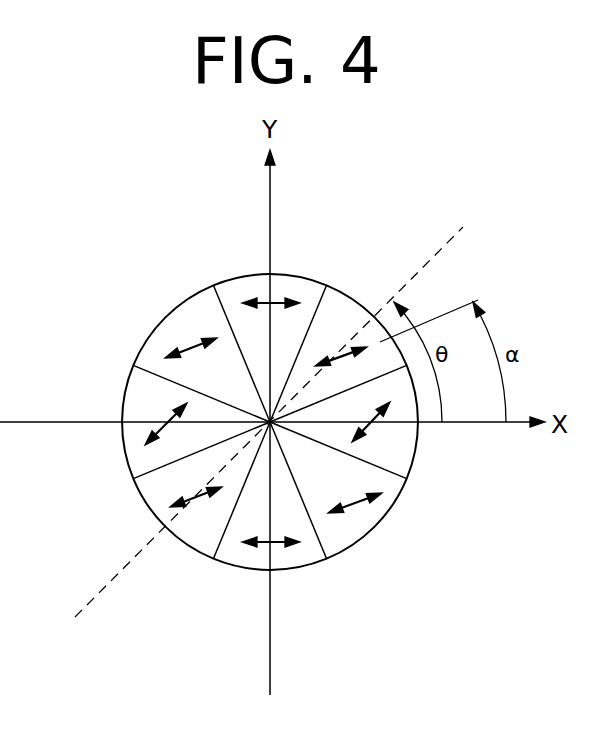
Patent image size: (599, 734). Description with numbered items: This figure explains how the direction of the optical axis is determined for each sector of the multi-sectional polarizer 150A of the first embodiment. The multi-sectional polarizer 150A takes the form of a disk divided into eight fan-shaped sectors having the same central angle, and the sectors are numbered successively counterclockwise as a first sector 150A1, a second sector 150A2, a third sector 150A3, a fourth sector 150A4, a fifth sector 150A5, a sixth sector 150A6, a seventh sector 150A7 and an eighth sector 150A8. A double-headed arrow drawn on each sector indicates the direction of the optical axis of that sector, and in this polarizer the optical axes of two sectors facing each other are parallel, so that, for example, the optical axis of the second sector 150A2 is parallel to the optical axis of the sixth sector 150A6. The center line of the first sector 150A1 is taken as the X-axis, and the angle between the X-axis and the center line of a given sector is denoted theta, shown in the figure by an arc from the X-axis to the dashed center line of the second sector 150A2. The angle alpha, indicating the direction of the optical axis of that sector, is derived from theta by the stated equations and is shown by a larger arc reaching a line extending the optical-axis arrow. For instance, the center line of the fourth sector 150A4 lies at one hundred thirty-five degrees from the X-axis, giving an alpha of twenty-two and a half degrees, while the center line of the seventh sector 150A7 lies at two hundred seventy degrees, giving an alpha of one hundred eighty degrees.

The multi-sectional polarizer 150A is at (180, 202).
The first sector 150A1 is at (417, 455).
The second sector 150A2 is at (355, 297).
The third sector 150A3 is at (297, 273).
The fourth sector 150A4 is at (163, 318).
The fifth sector 150A5 is at (123, 400).
The sixth sector 150A6 is at (145, 505).
The seventh sector 150A7 is at (298, 570).
The eighth sector 150A8 is at (372, 535).